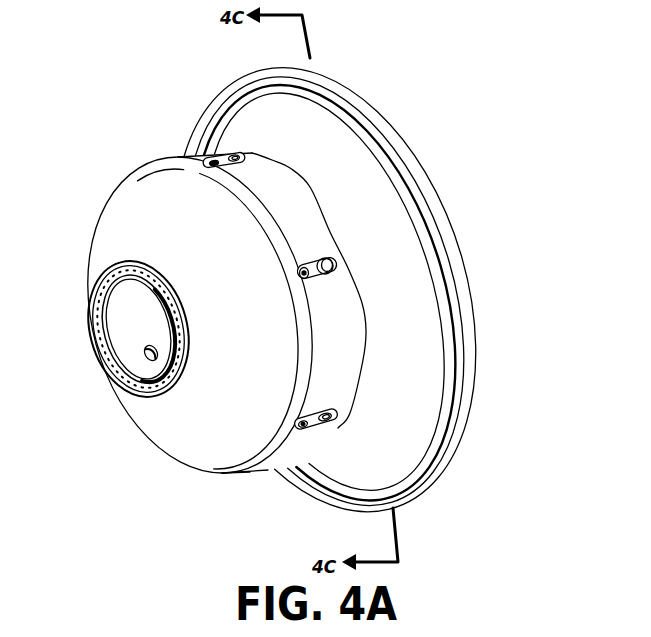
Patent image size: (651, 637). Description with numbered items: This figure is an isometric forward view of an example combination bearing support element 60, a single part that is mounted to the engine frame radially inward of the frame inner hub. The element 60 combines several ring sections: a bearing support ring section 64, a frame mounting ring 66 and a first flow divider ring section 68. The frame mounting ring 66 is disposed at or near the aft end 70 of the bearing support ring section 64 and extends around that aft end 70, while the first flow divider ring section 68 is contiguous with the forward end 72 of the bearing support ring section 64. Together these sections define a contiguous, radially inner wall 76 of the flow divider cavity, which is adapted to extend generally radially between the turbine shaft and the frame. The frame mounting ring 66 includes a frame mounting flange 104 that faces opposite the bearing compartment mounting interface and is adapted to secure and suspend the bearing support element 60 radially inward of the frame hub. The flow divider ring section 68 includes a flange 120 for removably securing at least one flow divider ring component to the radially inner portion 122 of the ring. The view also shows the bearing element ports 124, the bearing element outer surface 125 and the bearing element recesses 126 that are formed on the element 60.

The combination bearing support element 60 is at (509, 140).
The bearing support ring section 64 is at (313, 231).
The frame mounting ring 66 is at (407, 315).
The first flow divider ring section 68 is at (210, 255).
The aft end 70 is at (303, 183).
The forward end 72 is at (146, 172).
The radially inner wall 76 is at (168, 126).
The frame mounting flange 104 is at (466, 376).
The flange 120 is at (101, 372).
The flow divider ring radially inner portion 122 is at (142, 411).
The bearing element ports 124 is at (232, 152).
The bearing element outer surface 125 is at (340, 356).
The bearing element recesses 126 is at (212, 155).